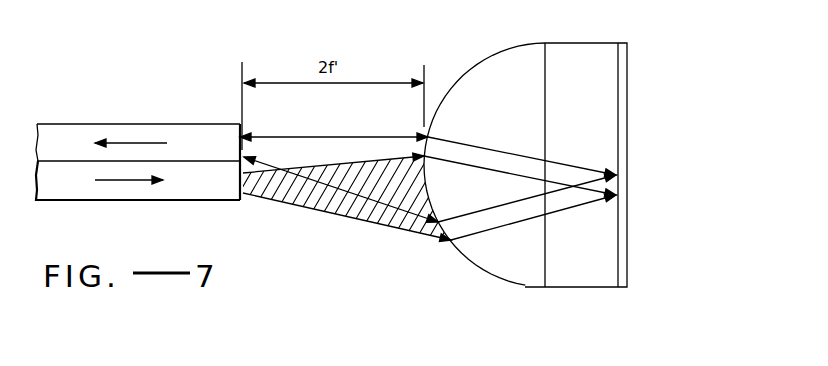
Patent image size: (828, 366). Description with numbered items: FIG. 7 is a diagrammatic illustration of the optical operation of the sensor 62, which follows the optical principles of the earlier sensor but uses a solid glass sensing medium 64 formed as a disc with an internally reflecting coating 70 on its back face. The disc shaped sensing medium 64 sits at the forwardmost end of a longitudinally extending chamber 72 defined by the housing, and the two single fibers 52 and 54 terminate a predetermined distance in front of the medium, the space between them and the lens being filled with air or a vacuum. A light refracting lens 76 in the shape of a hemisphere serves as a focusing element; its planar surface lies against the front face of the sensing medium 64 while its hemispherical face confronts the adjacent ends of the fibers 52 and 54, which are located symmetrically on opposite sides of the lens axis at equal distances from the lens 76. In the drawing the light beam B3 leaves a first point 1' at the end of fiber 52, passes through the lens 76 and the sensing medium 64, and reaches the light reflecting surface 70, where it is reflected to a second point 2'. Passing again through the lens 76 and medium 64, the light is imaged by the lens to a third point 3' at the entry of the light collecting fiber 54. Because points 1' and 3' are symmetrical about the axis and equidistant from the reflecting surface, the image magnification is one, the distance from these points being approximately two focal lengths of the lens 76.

The single fiber 52 is at (130, 193).
The light collecting fiber 54 is at (86, 137).
The sensor 62 is at (160, 6).
The sensing medium 64 is at (578, 58).
The internally reflecting coating 70 is at (622, 137).
The chamber 72 is at (324, 4).
The light refracting lens 76 is at (468, 60).
The first point 1' is at (414, 217).
The second point 2' is at (430, 163).
The third point 3' is at (401, 132).
The light beam B3 is at (324, 200).